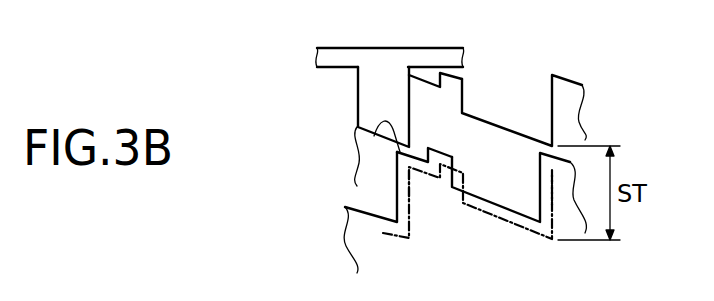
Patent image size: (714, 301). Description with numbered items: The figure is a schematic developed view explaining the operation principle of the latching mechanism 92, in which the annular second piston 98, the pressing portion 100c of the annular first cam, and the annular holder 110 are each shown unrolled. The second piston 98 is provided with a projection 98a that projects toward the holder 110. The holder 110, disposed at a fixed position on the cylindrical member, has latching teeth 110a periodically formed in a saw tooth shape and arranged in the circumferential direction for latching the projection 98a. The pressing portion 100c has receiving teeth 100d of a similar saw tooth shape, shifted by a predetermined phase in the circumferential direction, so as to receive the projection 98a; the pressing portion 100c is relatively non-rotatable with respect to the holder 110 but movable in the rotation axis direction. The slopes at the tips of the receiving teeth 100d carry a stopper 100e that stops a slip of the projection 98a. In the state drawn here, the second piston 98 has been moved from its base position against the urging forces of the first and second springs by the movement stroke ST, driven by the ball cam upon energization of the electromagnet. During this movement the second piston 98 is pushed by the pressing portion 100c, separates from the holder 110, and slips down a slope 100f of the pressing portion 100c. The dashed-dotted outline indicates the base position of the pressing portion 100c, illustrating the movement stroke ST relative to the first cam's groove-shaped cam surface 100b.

The latching mechanism 92 is at (585, 58).
The second piston 98 is at (388, 65).
The projection 98a is at (377, 101).
The cam surface 100b is at (450, 155).
The pressing portion 100c is at (373, 156).
The receiving teeth 100d is at (425, 105).
The stopper 100e is at (452, 83).
The slope 100f is at (398, 152).
The holder 110 is at (358, 218).
The latching teeth 110a is at (408, 184).